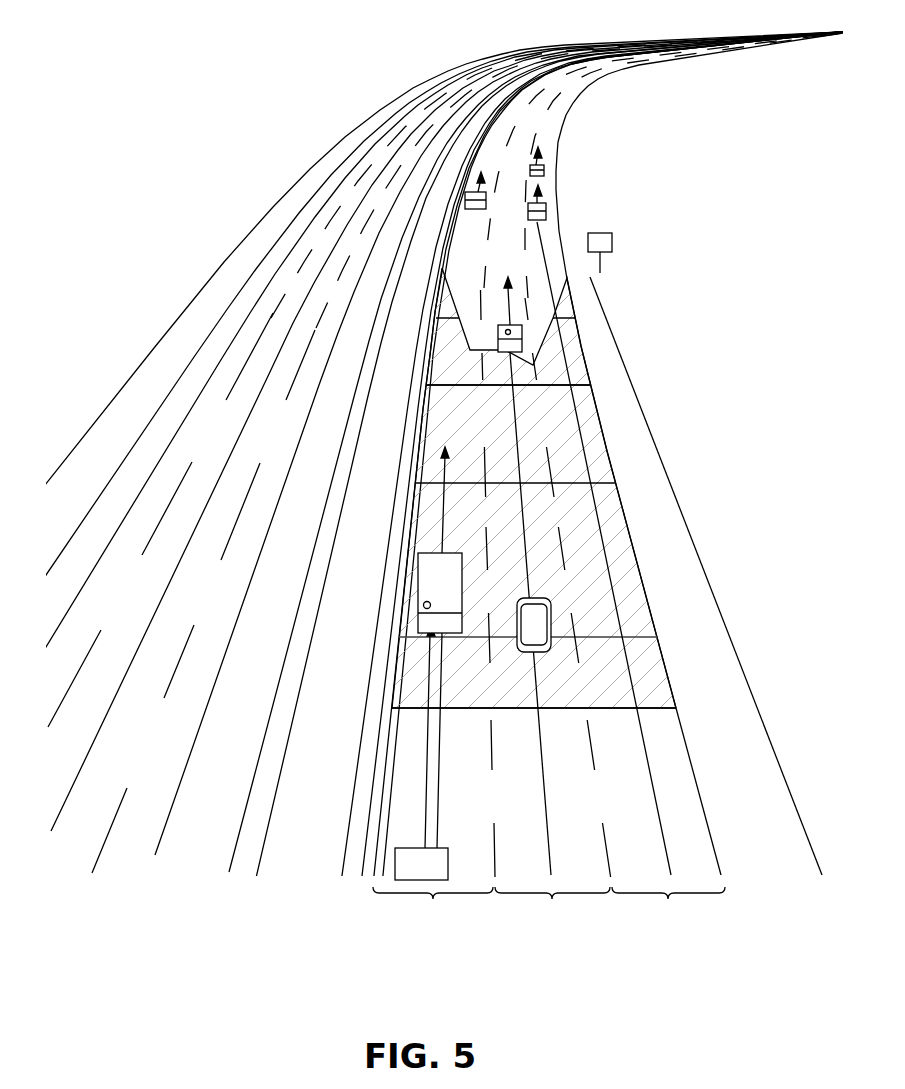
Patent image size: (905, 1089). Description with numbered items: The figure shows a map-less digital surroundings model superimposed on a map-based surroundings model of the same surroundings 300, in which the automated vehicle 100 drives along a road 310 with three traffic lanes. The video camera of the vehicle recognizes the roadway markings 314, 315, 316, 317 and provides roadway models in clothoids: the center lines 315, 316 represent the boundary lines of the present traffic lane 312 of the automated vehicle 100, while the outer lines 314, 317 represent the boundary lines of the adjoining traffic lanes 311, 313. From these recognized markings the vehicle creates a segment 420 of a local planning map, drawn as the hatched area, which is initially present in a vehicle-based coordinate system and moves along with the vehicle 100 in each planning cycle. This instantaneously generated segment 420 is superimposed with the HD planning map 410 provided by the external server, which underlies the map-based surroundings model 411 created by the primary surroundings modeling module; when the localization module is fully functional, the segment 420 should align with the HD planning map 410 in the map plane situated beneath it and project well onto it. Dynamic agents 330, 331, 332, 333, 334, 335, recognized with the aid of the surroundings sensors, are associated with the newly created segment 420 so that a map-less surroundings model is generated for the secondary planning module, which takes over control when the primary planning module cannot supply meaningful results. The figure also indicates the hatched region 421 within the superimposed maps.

The automated vehicle 100 is at (540, 620).
The surroundings 300 is at (766, 250).
The road 310 is at (613, 243).
The adjoining traffic lane 311 is at (434, 614).
The present traffic lane 312 is at (553, 618).
The adjoining traffic lane 313 is at (668, 912).
The outer line 314 is at (420, 438).
The center line 315 is at (430, 346).
The center line 316 is at (540, 395).
The outer line 317 is at (628, 515).
The dynamic agent 330 is at (407, 860).
The dynamic agent 331 is at (437, 588).
The dynamic agent 332 is at (522, 335).
The dynamic agent 333 is at (547, 212).
The dynamic agent 334 is at (488, 188).
The dynamic agent 335 is at (545, 163).
The HD planning map 410 is at (693, 744).
The map-based surroundings model 411 is at (675, 780).
The segment of the local planning map 420 is at (645, 553).
The hatched free space region 421 is at (625, 589).